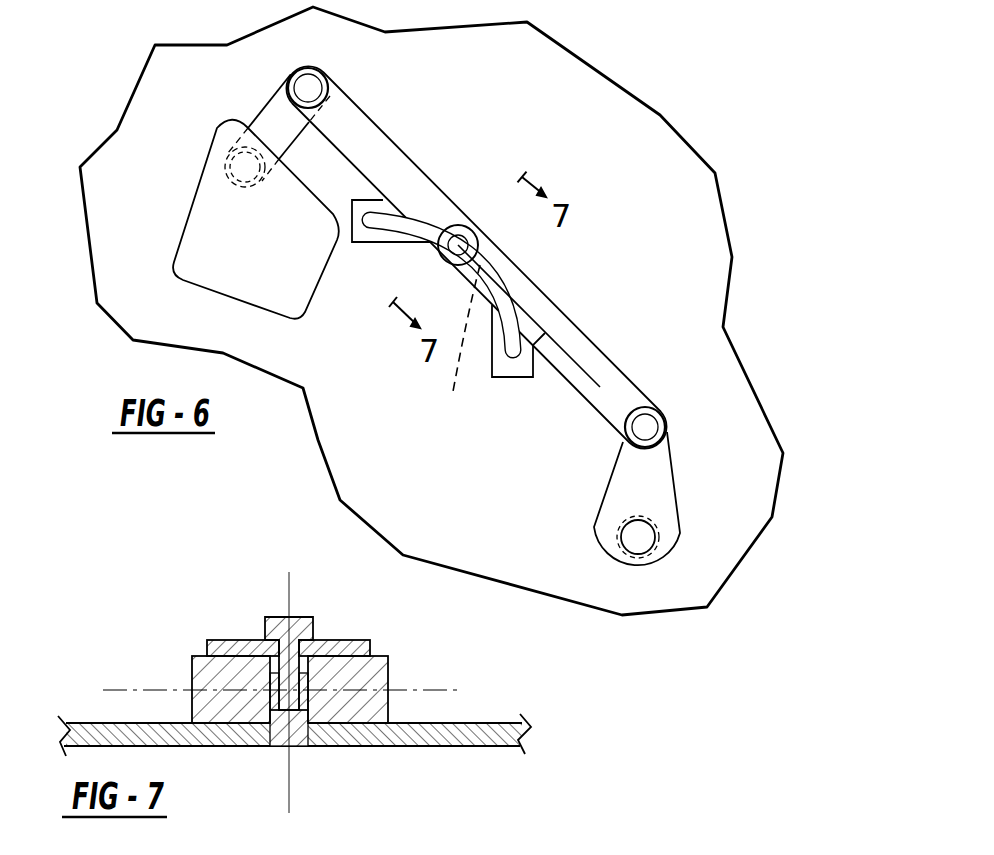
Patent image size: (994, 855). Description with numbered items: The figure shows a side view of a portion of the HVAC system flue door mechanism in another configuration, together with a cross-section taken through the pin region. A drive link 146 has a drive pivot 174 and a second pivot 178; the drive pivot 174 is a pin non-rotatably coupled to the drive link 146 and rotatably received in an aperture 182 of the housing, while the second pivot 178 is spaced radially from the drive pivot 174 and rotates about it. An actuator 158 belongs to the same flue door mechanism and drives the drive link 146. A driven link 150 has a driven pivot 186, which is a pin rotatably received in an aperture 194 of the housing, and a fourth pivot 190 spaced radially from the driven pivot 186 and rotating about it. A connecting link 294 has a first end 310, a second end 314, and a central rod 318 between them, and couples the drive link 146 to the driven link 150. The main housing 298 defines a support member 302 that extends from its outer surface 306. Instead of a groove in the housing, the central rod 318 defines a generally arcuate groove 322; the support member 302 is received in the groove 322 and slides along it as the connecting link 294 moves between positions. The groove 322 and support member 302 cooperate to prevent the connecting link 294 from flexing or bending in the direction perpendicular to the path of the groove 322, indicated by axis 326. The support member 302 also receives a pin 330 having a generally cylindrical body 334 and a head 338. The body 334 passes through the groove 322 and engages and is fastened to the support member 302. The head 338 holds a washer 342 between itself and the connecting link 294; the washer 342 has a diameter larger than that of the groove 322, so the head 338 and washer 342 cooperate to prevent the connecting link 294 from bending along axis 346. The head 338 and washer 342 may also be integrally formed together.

In FIG. 6, the drive link 146 is at (262, 108).
In FIG. 6, the driven link 150 is at (675, 485).
In FIG. 6, the actuator 158 is at (215, 262).
In FIG. 6, the drive pivot 174 is at (247, 165).
In FIG. 6, the second pivot 178 is at (308, 88).
In FIG. 6, the aperture 182 is at (227, 170).
In FIG. 6, the driven pivot 186 is at (640, 538).
In FIG. 6, the fourth pivot 190 is at (657, 420).
In FIG. 6, the aperture 194 is at (637, 556).
In FIG. 6, the connecting link 294 is at (578, 326).
In FIG. 7, the connecting link 294 is at (377, 678).
In FIG. 6, the main housing 298 is at (663, 160).
In FIG. 7, the main housing 298 is at (464, 746).
In FIG. 6, the support member 302 is at (457, 347).
In FIG. 7, the support member 302 is at (303, 710).
In FIG. 6, the outer surface 306 is at (670, 322).
In FIG. 7, the outer surface 306 is at (498, 723).
In FIG. 6, the first end 310 is at (353, 105).
In FIG. 6, the second end 314 is at (632, 387).
In FIG. 6, the central rod 318 is at (545, 282).
In FIG. 7, the central rod 318 is at (192, 670).
In FIG. 6, the groove 322 is at (515, 360).
In FIG. 7, the groove 322 is at (280, 667).
In FIG. 7, the axis 326 is at (126, 688).
In FIG. 6, the pin 330 is at (458, 245).
In FIG. 7, the pin 330 is at (310, 627).
In FIG. 7, the body 334 is at (280, 698).
In FIG. 7, the head 338 is at (270, 620).
In FIG. 6, the washer 342 is at (458, 245).
In FIG. 7, the washer 342 is at (362, 640).
In FIG. 7, the axis 346 is at (276, 582).